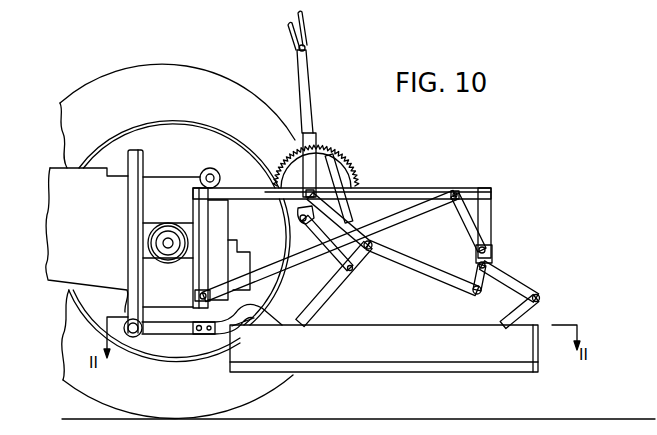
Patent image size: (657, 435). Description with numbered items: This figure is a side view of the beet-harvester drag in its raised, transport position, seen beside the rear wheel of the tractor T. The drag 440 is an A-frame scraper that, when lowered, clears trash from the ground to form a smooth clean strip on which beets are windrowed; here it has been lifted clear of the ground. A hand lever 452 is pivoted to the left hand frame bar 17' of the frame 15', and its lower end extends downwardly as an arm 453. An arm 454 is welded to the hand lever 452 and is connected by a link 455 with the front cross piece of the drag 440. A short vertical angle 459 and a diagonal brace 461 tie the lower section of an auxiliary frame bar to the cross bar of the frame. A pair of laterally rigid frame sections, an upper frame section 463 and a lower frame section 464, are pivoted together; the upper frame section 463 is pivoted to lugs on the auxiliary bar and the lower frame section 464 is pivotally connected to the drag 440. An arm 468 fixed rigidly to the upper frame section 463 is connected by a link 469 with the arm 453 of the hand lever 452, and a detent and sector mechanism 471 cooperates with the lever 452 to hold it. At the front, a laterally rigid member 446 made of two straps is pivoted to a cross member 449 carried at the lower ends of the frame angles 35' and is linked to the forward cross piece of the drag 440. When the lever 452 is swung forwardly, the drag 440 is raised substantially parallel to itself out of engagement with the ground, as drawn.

The tractor T is at (54, 163).
The frame angles 35' is at (143, 225).
The frame 15' is at (326, 229).
The left hand frame bar 17' is at (342, 169).
The drag 440 is at (381, 379).
The laterally rigid member 446 is at (169, 343).
The cross member 449 is at (135, 335).
The hand lever 452 is at (307, 90).
The arm 453 is at (306, 223).
The arm 454 is at (340, 219).
The link 455 is at (344, 277).
The short vertical angle 459 is at (487, 215).
The diagonal brace 461 is at (467, 223).
The upper frame section 463 is at (520, 274).
The lower frame section 464 is at (531, 316).
The arm 468 is at (483, 281).
The link 469 is at (412, 268).
The detent and sector mechanism 471 is at (290, 149).